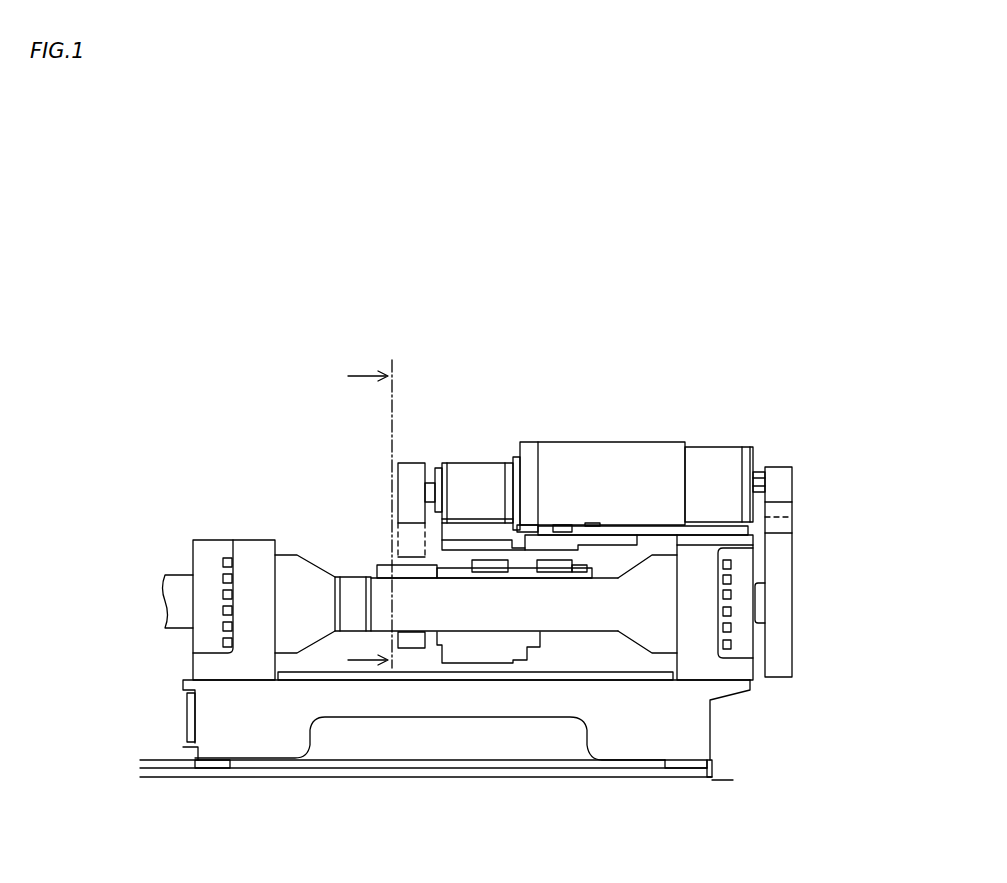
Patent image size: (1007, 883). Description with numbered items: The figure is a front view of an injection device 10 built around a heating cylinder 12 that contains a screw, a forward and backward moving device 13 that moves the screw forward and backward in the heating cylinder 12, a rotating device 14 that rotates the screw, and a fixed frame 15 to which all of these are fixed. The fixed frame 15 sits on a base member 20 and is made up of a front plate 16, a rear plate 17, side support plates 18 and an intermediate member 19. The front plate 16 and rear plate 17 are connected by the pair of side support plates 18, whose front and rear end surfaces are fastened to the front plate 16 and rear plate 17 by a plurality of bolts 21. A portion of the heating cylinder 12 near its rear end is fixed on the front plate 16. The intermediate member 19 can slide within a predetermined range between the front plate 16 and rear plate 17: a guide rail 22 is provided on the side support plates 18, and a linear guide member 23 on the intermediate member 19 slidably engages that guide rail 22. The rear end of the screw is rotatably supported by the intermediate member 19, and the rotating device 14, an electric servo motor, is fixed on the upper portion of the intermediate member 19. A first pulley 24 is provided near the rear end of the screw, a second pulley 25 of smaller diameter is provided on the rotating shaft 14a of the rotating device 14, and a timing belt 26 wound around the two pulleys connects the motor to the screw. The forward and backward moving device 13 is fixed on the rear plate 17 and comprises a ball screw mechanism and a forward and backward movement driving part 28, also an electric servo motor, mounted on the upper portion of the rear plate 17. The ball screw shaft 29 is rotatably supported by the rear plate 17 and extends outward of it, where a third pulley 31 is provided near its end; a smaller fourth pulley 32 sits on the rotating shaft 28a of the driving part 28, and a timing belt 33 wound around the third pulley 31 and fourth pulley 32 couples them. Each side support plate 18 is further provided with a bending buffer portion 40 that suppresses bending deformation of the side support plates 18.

The injection device 10 is at (700, 280).
The heating cylinder 12 is at (180, 575).
The forward and backward moving device 13 is at (763, 382).
The rotating device 14 is at (470, 475).
The rotating shaft 14a is at (437, 482).
The fixed frame 15 is at (292, 507).
The front plate 16 is at (240, 550).
The rear plate 17 is at (707, 663).
The side support plate 18 is at (598, 605).
The intermediate member 19 is at (495, 650).
The base member 20 is at (222, 728).
The bolt 21 is at (225, 605).
The guide rail 22 is at (380, 572).
The linear guide member 23 is at (480, 568).
The first pulley 24 is at (408, 640).
The second pulley 25 is at (410, 470).
The timing belt 26 is at (400, 545).
The forward and backward movement driving part 28 is at (600, 448).
The rotating shaft 28a is at (759, 483).
The ball screw shaft 29 is at (760, 603).
The third pulley 31 is at (785, 650).
The fourth pulley 32 is at (783, 487).
The timing belt 33 is at (780, 518).
The bending buffer portion 40 is at (352, 597).